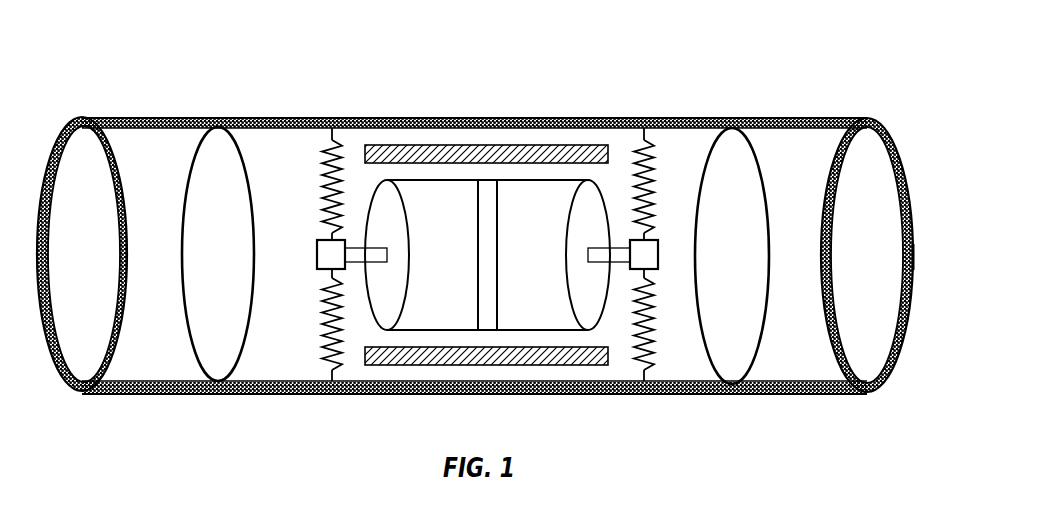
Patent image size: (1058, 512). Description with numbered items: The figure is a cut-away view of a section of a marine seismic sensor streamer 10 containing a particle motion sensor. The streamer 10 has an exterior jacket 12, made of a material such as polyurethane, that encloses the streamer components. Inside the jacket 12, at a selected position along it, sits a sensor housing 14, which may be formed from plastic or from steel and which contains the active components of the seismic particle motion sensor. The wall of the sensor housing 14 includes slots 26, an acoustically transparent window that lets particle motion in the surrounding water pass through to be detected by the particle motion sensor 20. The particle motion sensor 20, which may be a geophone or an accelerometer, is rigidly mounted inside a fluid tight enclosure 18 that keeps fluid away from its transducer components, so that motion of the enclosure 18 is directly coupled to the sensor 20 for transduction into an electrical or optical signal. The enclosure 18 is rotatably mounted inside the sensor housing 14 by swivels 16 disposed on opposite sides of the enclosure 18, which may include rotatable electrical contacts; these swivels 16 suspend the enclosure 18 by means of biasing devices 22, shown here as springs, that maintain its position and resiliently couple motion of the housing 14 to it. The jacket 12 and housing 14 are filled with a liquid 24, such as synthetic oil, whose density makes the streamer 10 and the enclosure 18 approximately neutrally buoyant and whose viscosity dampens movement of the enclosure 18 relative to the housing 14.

The streamer 10 is at (716, 56).
The exterior jacket 12 is at (175, 393).
The sensor housing 14 is at (273, 368).
The swivels 16 is at (318, 243).
The fluid tight enclosure 18 is at (410, 312).
The particle motion sensor 20 is at (499, 228).
The biasing devices 22 is at (323, 167).
The liquid 24 is at (697, 383).
The slots 26 is at (407, 145).